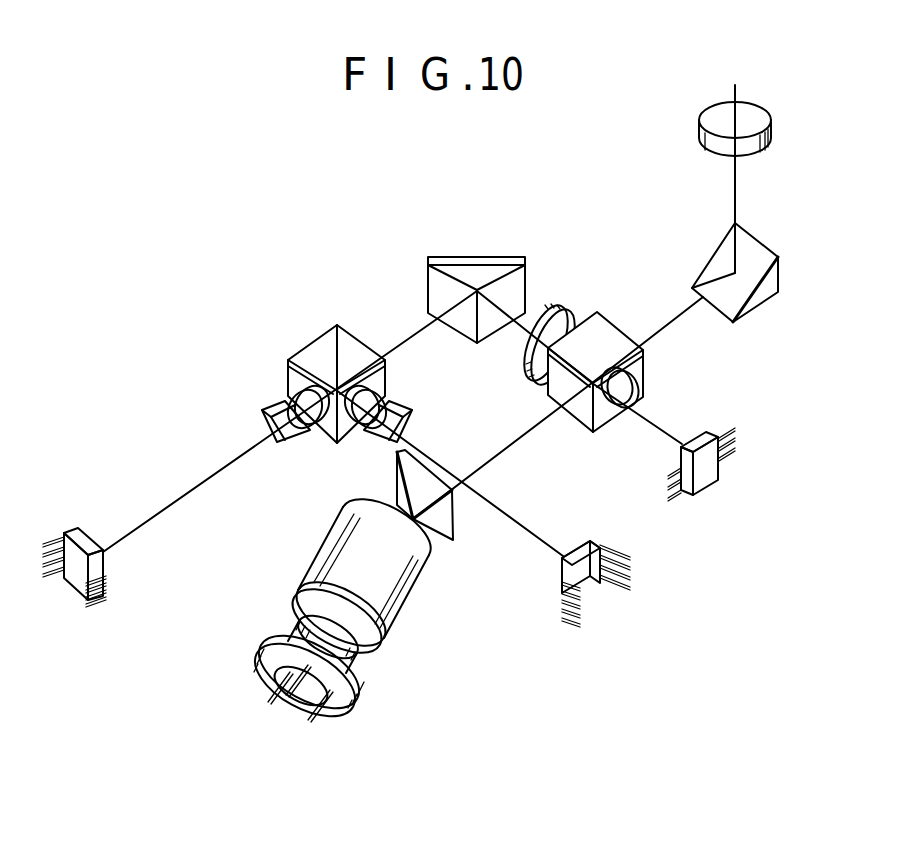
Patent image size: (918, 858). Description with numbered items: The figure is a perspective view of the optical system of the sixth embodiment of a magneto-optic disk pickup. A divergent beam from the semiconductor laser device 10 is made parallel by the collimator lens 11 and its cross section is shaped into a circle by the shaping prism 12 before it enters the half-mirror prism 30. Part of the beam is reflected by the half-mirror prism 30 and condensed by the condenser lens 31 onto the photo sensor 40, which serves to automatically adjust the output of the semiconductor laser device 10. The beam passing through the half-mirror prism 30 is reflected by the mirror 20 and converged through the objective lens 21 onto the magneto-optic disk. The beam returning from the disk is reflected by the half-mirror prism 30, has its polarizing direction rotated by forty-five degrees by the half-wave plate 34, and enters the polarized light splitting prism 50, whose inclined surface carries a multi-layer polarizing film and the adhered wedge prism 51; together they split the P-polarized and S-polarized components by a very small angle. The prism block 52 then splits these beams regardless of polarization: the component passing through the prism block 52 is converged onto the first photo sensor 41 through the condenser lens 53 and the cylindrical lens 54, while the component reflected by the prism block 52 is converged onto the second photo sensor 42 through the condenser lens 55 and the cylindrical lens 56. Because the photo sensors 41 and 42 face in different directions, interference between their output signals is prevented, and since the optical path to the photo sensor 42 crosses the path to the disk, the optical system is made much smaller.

The semiconductor laser device 10 is at (360, 684).
The collimator lens 11 is at (410, 604).
The shaping prism 12 is at (443, 540).
The mirror 20 is at (727, 309).
The objective lens 21 is at (757, 150).
The half-mirror prism 30 is at (577, 412).
The condenser lens 31 is at (636, 386).
The λ/2 plate 34 is at (556, 312).
The photo sensor 40 is at (710, 481).
The first photo sensor 41 is at (72, 582).
The second photo sensor 42 is at (595, 590).
The polarized light splitting prism 50 is at (520, 290).
The wedge prism 51 is at (452, 256).
The prism block 52 is at (322, 346).
The condenser lens 53 is at (287, 376).
The cylindrical lens 54 is at (266, 410).
The condenser lens 55 is at (388, 386).
The cylindrical lens 56 is at (405, 408).